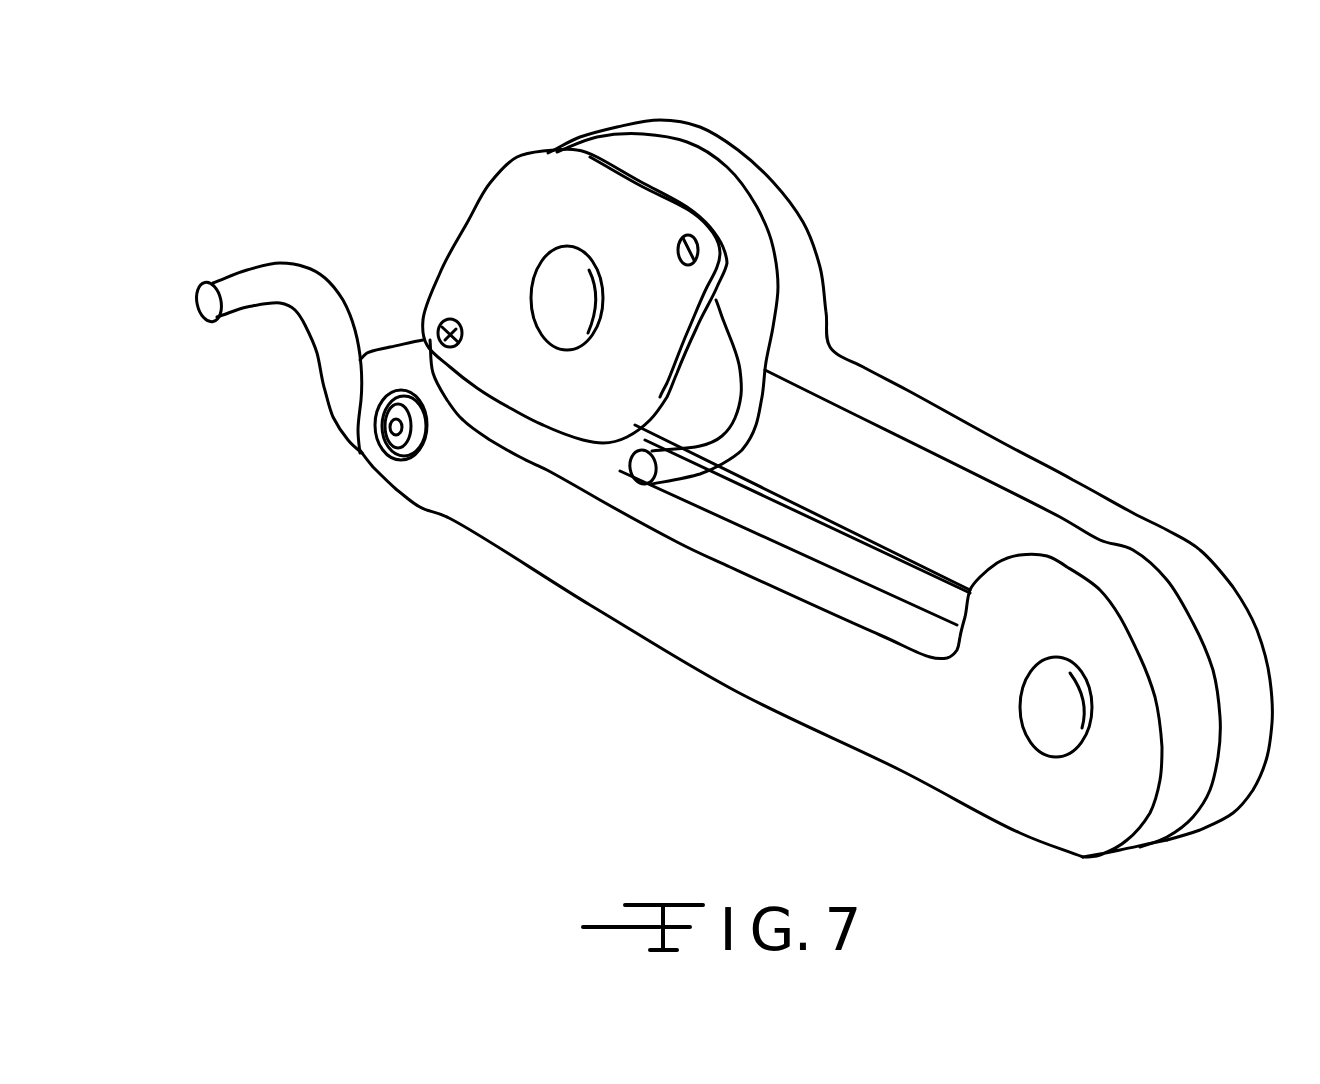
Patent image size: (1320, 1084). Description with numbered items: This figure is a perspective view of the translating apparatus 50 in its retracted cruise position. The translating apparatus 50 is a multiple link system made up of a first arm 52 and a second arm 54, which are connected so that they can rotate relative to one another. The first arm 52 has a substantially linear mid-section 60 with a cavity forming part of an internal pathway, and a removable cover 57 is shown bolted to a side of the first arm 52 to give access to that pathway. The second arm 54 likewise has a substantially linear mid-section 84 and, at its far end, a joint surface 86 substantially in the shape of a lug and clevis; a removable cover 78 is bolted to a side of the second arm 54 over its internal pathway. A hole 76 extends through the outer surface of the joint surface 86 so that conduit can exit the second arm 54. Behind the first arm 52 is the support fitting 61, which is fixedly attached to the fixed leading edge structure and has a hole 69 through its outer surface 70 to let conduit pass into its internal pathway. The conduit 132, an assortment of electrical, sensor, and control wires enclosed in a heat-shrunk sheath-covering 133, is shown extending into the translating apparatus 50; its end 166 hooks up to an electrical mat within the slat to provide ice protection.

The translating apparatus 50 is at (1078, 392).
The first arm 52 is at (907, 390).
The second arm 54 is at (718, 650).
The removable cover 57 is at (993, 520).
The substantially linear mid-section 60 is at (952, 463).
The support fitting 61 is at (587, 147).
The hole 69 is at (724, 290).
The outer surface 70 is at (663, 188).
The hole 76 is at (378, 444).
The removable cover 78 is at (768, 484).
The substantially linear mid-section 84 is at (633, 632).
The joint surface 86 is at (386, 362).
The conduit 132 is at (300, 302).
The heat-shrunk sheath-covering 133 is at (233, 270).
The end 166 is at (211, 313).